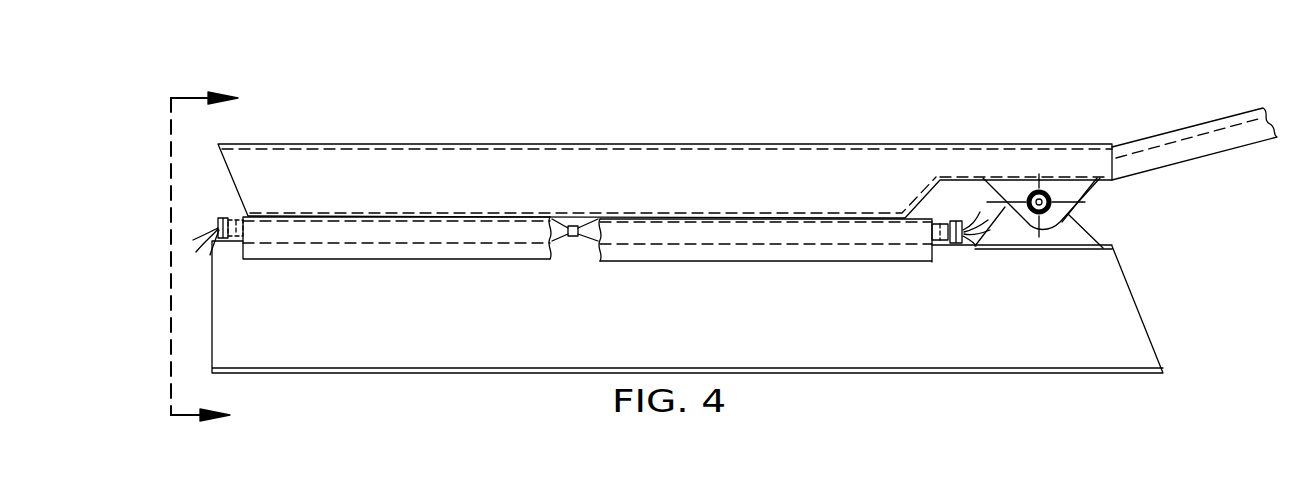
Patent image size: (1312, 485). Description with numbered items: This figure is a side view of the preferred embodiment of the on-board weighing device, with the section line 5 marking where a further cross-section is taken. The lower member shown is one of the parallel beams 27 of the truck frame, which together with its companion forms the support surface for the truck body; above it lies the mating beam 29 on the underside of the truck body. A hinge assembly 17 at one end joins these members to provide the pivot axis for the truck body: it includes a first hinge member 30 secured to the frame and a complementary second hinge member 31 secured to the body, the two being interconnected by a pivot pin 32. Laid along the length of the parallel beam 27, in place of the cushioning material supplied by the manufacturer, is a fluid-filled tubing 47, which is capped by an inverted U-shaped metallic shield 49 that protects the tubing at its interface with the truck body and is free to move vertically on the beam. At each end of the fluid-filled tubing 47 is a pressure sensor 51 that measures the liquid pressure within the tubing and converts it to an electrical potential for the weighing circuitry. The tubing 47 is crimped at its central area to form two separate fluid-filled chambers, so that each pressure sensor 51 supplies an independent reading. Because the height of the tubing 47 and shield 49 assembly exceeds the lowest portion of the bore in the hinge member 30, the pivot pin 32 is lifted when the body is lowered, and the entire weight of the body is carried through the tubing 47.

The section line 5- 5 is at (216, 257).
The hinge assembly 17 is at (1020, 186).
The parallel beam 27 is at (666, 328).
The beam 29 is at (787, 195).
The first hinge member 30 is at (1080, 224).
The second hinge member 31 is at (1078, 192).
The pivot pin 32 is at (1036, 206).
The fluid-filled tubing 47 is at (938, 236).
The inverted U-shaped metallic shield 49 is at (808, 252).
The pressure sensor 51 is at (968, 230).